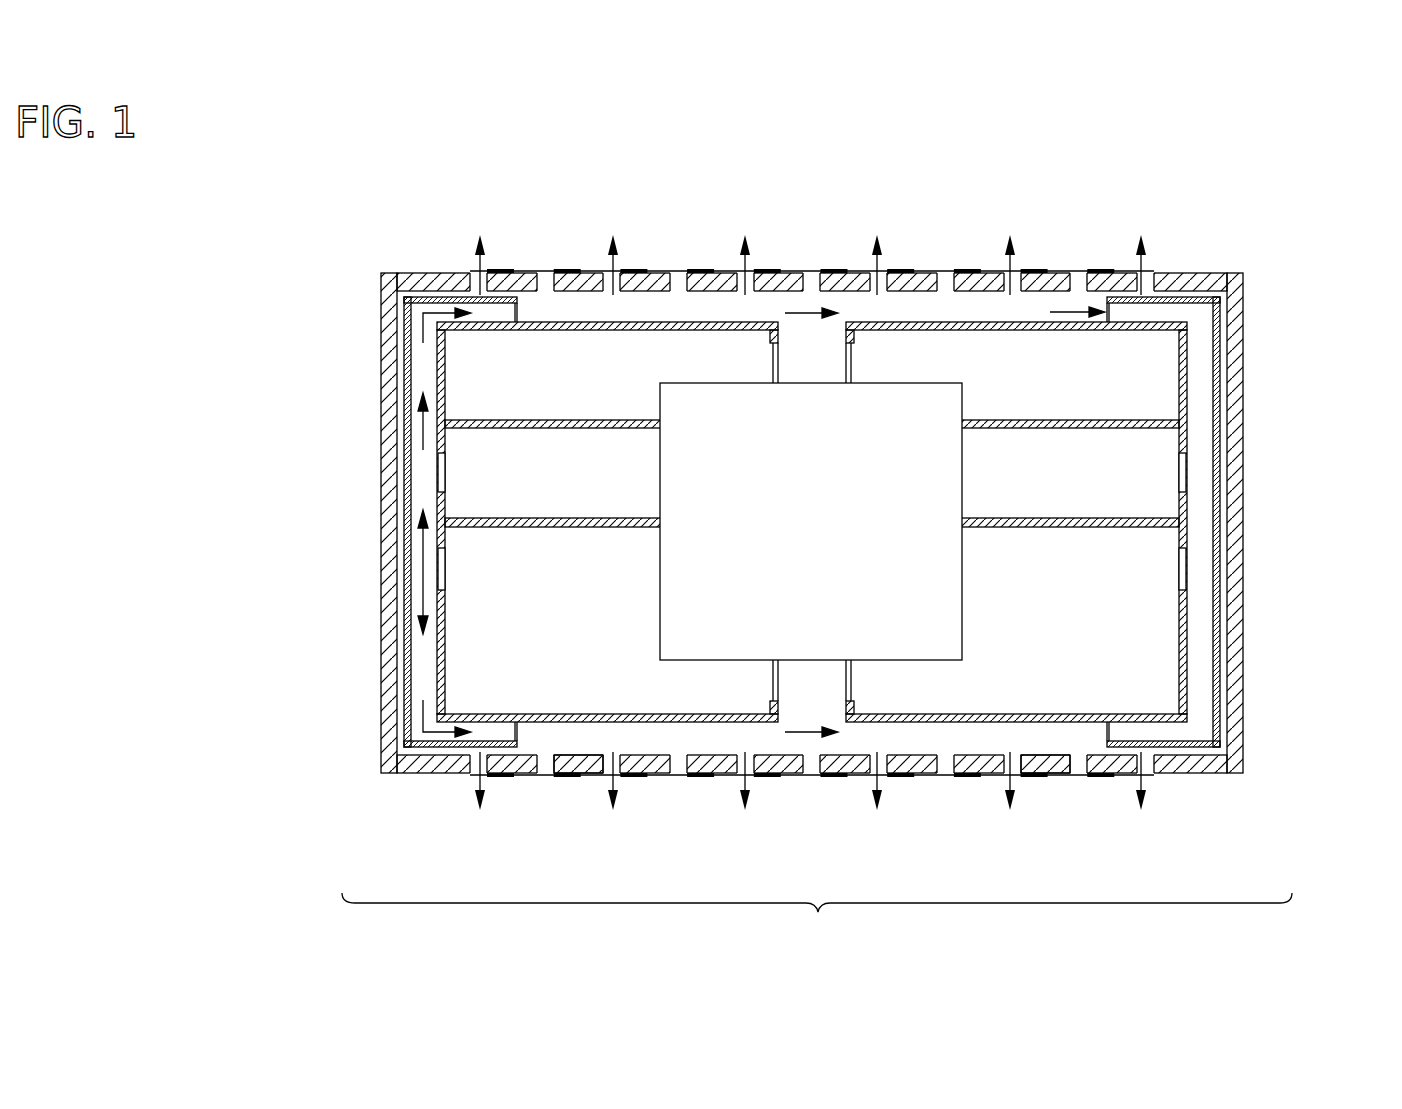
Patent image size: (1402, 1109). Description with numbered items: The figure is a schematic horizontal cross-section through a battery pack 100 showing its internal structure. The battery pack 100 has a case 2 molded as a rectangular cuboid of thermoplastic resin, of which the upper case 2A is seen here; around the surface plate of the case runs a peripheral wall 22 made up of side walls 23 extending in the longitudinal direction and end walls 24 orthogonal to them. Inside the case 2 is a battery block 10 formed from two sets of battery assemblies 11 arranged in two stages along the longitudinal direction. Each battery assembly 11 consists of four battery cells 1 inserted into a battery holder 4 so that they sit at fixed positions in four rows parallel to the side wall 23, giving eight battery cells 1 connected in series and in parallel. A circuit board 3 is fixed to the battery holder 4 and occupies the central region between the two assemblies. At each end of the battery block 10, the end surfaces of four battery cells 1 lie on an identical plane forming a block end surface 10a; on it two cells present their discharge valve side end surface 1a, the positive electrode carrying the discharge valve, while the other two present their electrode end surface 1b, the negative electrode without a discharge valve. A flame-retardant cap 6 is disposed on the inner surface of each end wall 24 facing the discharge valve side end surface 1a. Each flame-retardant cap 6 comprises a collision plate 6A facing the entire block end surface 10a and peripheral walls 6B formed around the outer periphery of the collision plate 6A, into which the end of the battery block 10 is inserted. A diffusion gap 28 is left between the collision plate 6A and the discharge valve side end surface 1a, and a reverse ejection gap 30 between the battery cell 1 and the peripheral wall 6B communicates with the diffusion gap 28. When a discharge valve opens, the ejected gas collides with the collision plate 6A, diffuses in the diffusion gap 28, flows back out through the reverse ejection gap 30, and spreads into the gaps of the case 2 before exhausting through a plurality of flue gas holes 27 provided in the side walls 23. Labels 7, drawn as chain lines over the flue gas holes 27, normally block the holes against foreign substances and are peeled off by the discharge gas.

The battery pack 100 is at (310, 190).
The upper case 2A is at (1218, 243).
The case 2 is at (870, 540).
The peripheral wall 22 is at (817, 925).
The side wall 23 is at (700, 778).
The end wall 24 is at (388, 668).
The flue gas hole 27 is at (478, 261).
The battery holder 4 is at (558, 760).
The label 7 is at (522, 258).
The battery block 10 is at (672, 202).
The battery assembly 11 is at (645, 310).
The block end surface 10a is at (437, 498).
The battery cell 1 is at (585, 487).
The discharge valve side end surface 1a is at (437, 583).
The electrode end surface 1b is at (437, 474).
The circuit board 3 is at (797, 536).
The flame-retardant cap 6 is at (205, 267).
The collision plate 6A is at (410, 547).
The peripheral wall 6B is at (446, 298).
The diffusion gap 28 is at (423, 660).
The reverse ejection gap 30 is at (507, 732).